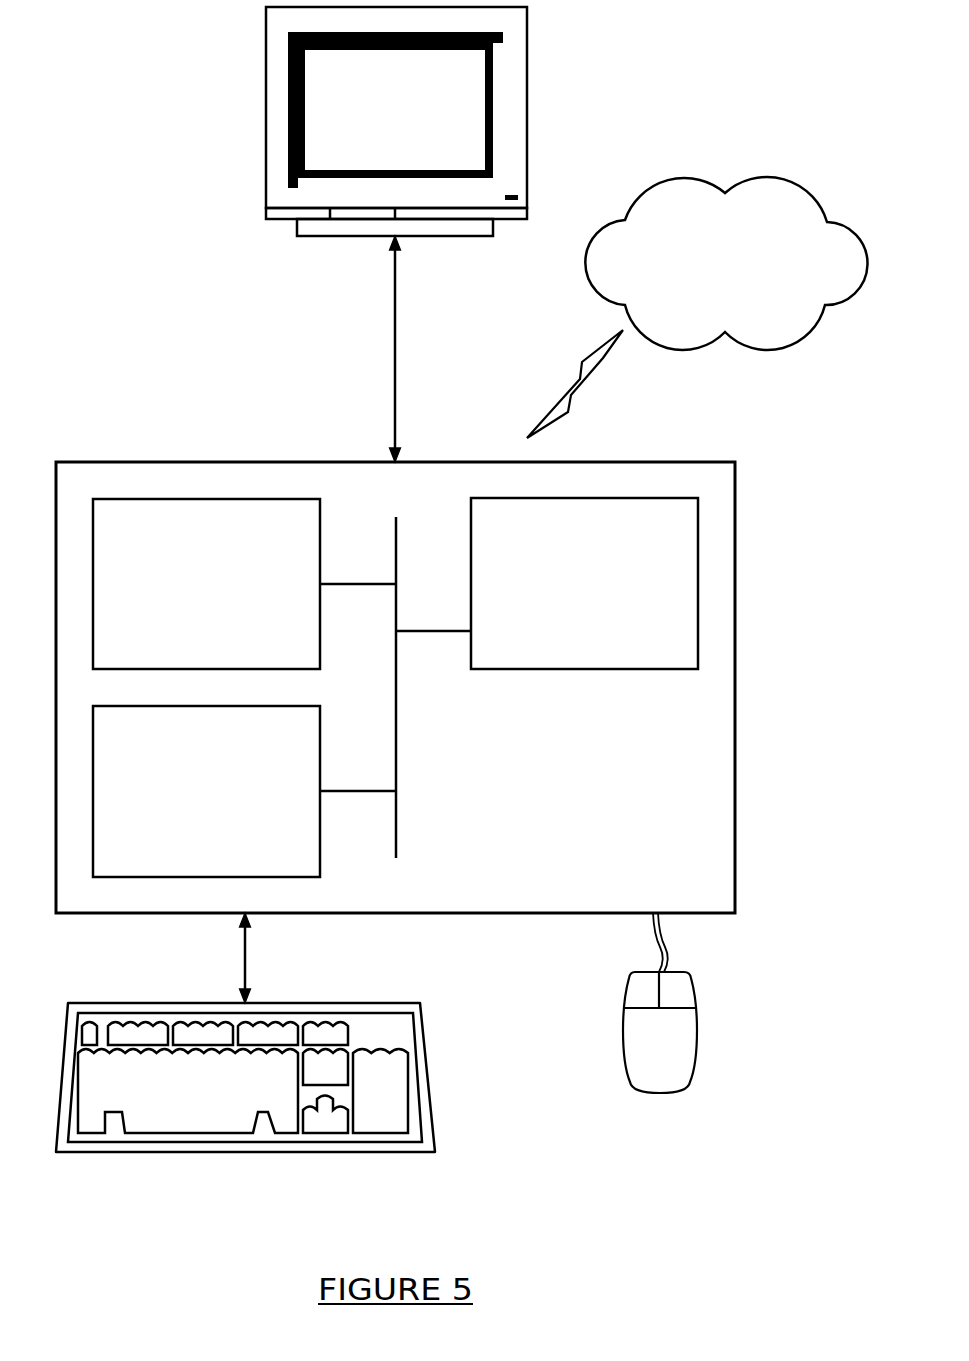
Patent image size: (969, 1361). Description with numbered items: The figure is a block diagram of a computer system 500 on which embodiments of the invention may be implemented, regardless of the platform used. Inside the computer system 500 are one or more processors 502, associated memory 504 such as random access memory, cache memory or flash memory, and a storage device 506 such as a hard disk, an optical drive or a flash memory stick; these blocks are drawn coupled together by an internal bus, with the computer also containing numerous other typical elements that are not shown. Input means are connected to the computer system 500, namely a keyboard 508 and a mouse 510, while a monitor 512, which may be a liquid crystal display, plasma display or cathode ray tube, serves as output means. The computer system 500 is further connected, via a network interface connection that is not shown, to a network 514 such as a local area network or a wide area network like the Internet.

The computer system 500 is at (763, 529).
The processor 502 is at (605, 596).
The memory 504 is at (229, 596).
The storage device 506 is at (229, 804).
The keyboard 508 is at (209, 1106).
The mouse 510 is at (681, 1056).
The monitor 512 is at (418, 124).
The network 514 is at (747, 274).